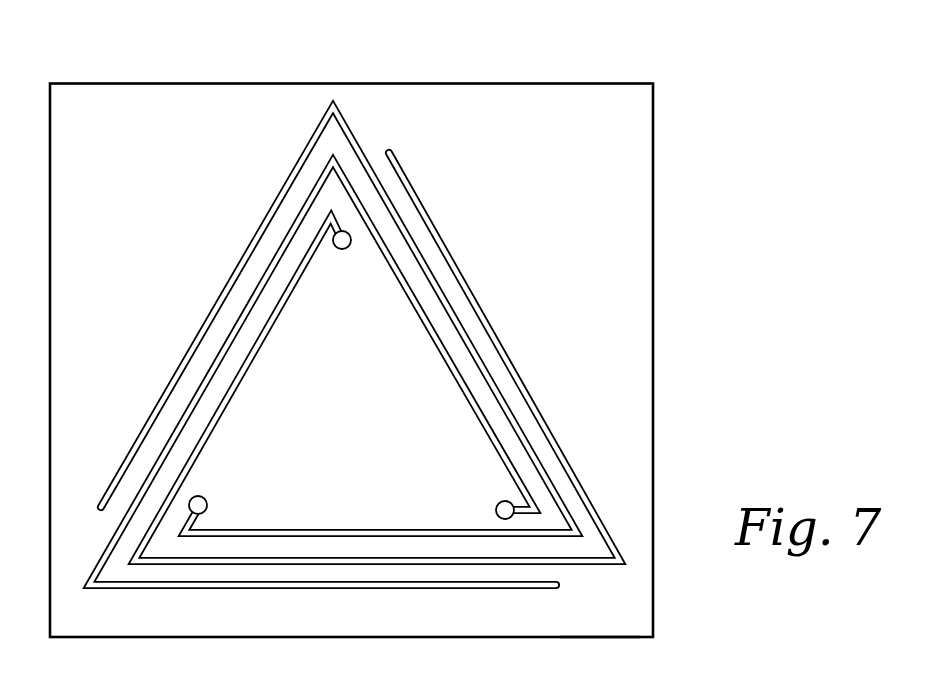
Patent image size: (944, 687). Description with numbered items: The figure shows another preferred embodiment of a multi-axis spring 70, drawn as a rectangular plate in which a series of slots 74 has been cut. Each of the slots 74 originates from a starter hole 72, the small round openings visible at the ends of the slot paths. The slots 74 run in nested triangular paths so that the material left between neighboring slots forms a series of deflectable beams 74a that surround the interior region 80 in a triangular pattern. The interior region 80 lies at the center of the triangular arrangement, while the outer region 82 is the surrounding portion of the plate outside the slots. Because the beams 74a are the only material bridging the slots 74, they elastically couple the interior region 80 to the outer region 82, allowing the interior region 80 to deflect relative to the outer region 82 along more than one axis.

The multi-axis spring 70 is at (520, 80).
The starter hole 72 is at (205, 497).
The slot 74 is at (335, 531).
The deflectable beam 74a is at (400, 545).
The interior region 80 is at (360, 367).
The outer region 82 is at (593, 620).